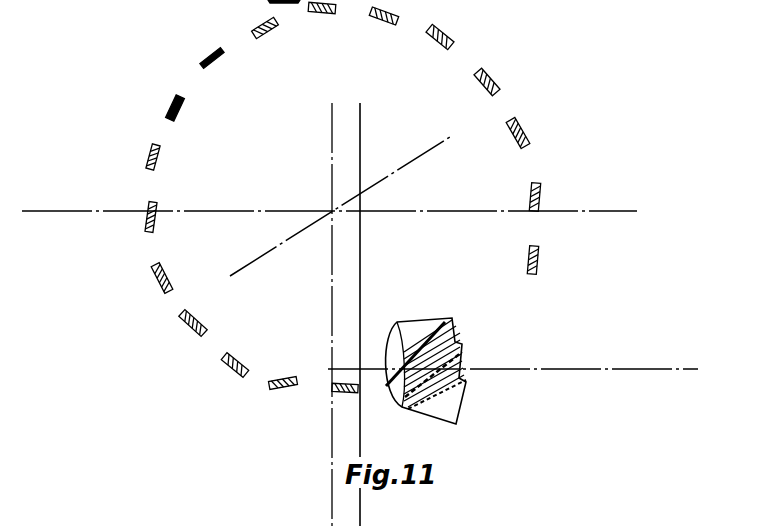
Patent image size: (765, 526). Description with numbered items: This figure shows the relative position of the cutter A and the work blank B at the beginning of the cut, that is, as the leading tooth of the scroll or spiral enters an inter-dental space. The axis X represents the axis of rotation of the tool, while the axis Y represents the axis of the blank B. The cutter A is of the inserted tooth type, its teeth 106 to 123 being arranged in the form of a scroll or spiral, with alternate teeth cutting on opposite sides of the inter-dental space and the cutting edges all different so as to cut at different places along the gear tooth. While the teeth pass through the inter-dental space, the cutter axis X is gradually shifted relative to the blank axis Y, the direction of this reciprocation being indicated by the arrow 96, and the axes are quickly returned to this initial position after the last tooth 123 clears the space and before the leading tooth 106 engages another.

The arrow 96 is at (352, 188).
The inserted tooth 106 is at (384, 388).
The inserted tooth 123 is at (540, 262).
The cutter A is at (184, 106).
The blank B is at (423, 365).
The axis of the tool X is at (332, 211).
The axis of the blank Y is at (516, 369).